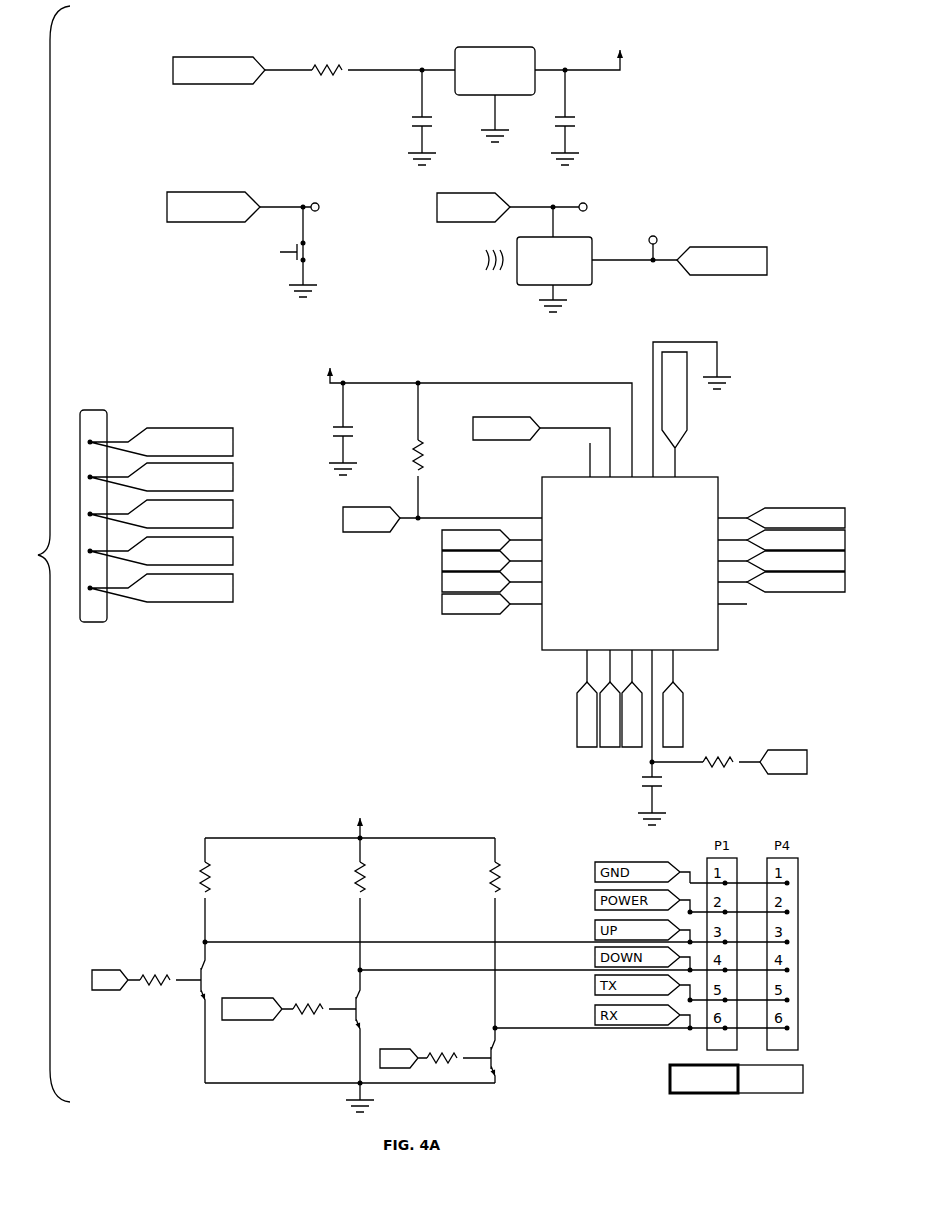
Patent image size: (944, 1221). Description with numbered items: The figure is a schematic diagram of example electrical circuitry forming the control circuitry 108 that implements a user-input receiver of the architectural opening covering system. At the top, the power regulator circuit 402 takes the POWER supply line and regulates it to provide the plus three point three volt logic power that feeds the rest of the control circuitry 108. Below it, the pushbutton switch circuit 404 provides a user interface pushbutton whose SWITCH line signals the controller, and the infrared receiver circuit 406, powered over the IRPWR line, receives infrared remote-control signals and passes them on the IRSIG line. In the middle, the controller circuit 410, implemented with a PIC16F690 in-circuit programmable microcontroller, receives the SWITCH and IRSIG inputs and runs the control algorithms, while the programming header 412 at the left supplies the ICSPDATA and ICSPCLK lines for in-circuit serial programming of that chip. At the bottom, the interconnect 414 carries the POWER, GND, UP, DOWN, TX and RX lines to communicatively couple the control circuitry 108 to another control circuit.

The power regulator circuit 402 is at (185, 48).
The pushbutton switch circuit 404 is at (185, 190).
The infrared (IR) receiver circuit 406 is at (710, 215).
The controller circuit 410 is at (710, 447).
The programming header 412 is at (133, 398).
The interconnect 414 is at (275, 818).
The control circuitry 108 is at (803, 1097).